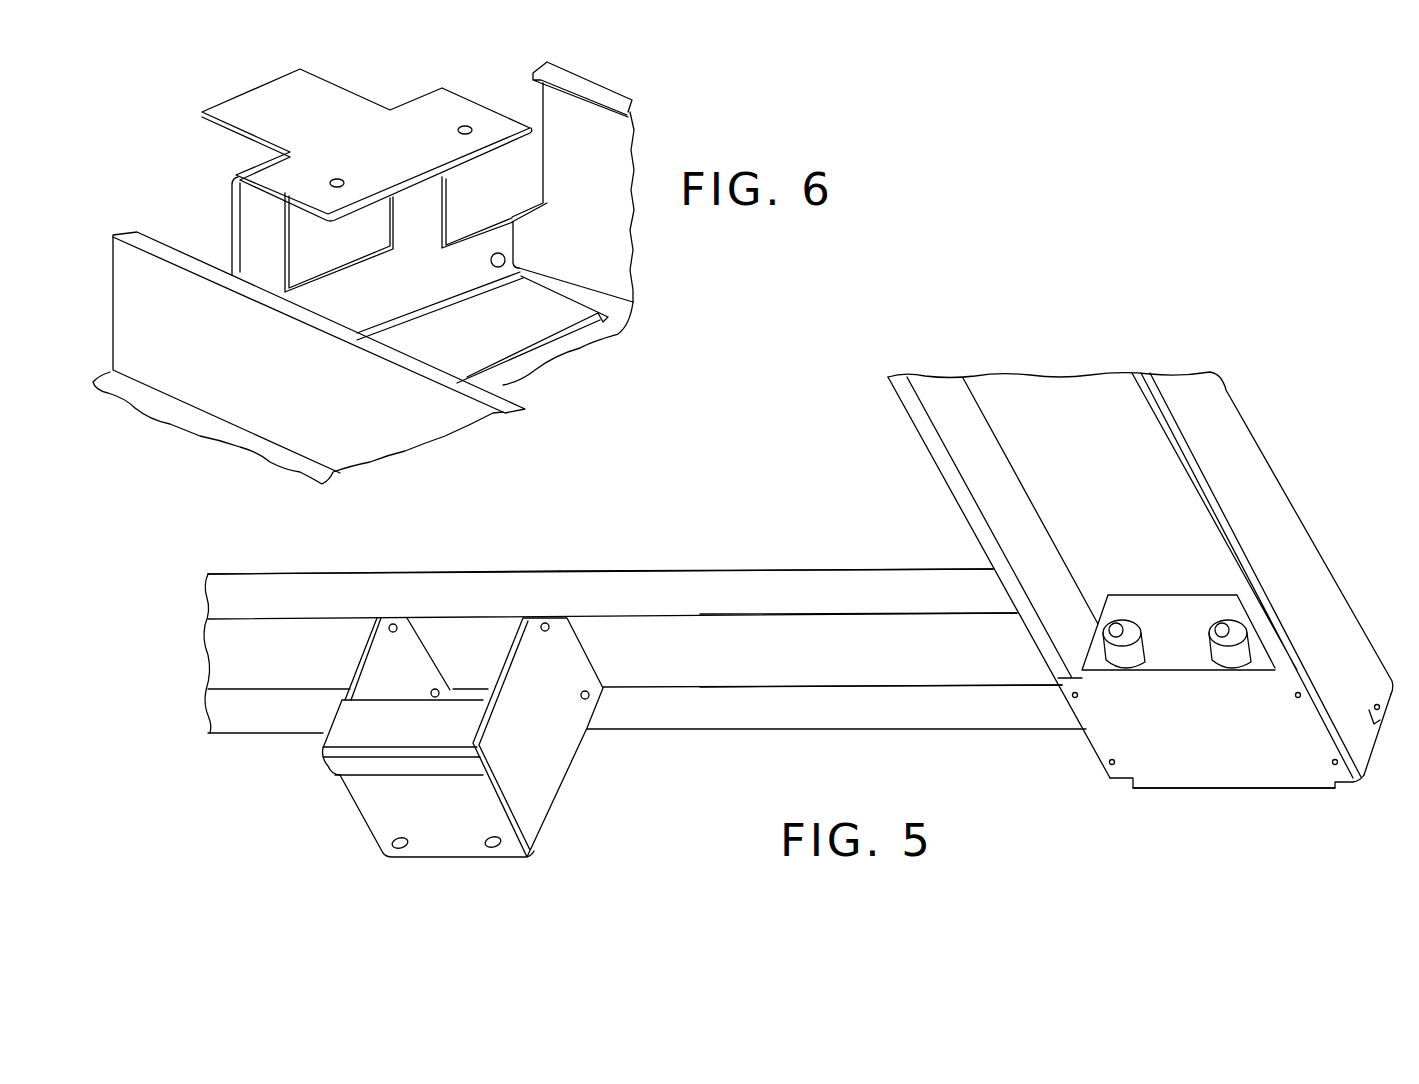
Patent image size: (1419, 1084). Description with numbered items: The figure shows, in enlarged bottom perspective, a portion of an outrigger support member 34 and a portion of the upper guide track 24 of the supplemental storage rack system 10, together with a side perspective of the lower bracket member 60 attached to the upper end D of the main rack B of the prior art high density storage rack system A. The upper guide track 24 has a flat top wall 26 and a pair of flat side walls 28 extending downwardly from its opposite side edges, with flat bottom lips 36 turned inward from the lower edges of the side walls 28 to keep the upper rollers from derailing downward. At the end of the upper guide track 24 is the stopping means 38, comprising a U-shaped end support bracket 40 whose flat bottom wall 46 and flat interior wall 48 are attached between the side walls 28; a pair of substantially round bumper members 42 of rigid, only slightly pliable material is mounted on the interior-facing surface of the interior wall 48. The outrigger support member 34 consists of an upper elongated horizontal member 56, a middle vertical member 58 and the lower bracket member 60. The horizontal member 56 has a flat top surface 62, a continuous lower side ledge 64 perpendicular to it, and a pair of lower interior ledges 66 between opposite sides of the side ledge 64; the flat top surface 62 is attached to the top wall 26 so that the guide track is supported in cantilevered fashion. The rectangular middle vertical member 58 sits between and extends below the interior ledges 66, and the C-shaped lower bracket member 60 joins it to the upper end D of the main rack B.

In FIG. 5, the supplemental storage rack system 10 is at (1190, 340).
In FIG. 5, the upper guide track 24 is at (1247, 433).
In FIG. 5, the top wall 26 is at (1055, 375).
In FIG. 5, the side walls 28 is at (975, 470).
In FIG. 5, the outrigger support member 34 is at (634, 566).
In FIG. 5, the bottom lips 36 is at (982, 528).
In FIG. 5, the stopping means 38 is at (1194, 796).
In FIG. 5, the end support bracket 40 is at (1106, 742).
In FIG. 5, the bumper members 42 is at (1228, 630).
In FIG. 5, the flat bottom wall 46 is at (1264, 758).
In FIG. 5, the flat interior wall 48 is at (1167, 676).
In FIG. 5, the upper elongated horizontal member 56 is at (738, 570).
In FIG. 5, the middle vertical member 58 is at (547, 778).
In FIG. 6, the lower bracket member 60 is at (406, 86).
In FIG. 5, the flat top surface 62 is at (559, 570).
In FIG. 5, the continuous lower side ledge 64 is at (863, 603).
In FIG. 5, the lower interior ledges 66 is at (575, 653).
In FIG. 6, the high density storage rack system A is at (654, 280).
In FIG. 6, the main rack B is at (405, 438).
In FIG. 6, the upper end D is at (553, 355).